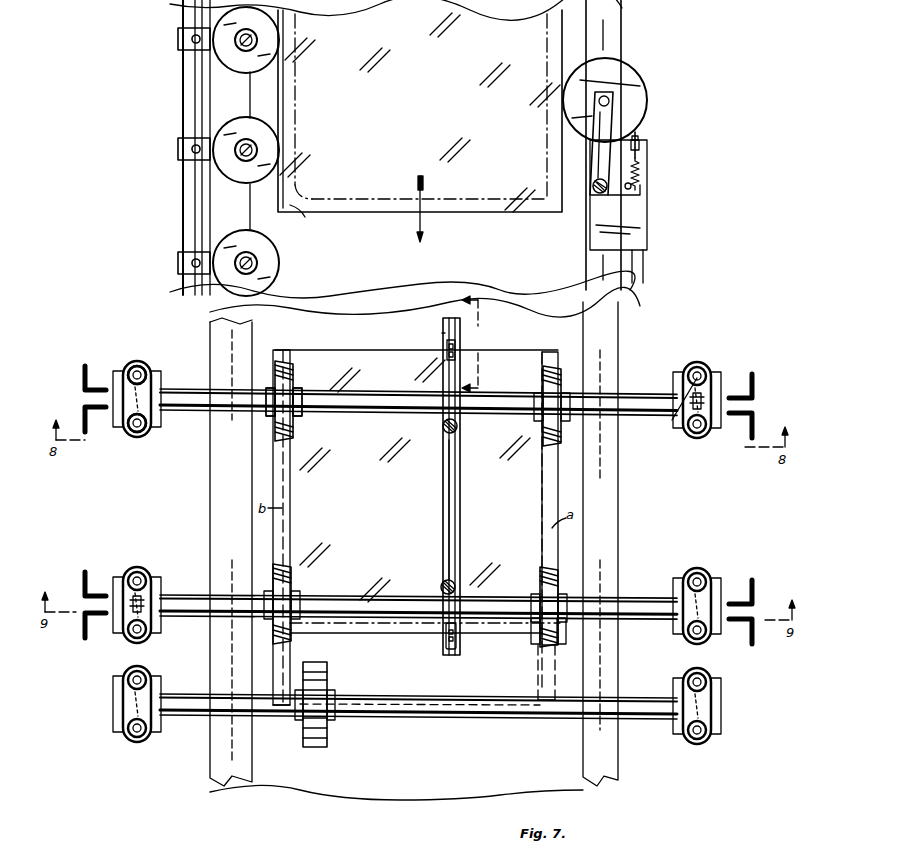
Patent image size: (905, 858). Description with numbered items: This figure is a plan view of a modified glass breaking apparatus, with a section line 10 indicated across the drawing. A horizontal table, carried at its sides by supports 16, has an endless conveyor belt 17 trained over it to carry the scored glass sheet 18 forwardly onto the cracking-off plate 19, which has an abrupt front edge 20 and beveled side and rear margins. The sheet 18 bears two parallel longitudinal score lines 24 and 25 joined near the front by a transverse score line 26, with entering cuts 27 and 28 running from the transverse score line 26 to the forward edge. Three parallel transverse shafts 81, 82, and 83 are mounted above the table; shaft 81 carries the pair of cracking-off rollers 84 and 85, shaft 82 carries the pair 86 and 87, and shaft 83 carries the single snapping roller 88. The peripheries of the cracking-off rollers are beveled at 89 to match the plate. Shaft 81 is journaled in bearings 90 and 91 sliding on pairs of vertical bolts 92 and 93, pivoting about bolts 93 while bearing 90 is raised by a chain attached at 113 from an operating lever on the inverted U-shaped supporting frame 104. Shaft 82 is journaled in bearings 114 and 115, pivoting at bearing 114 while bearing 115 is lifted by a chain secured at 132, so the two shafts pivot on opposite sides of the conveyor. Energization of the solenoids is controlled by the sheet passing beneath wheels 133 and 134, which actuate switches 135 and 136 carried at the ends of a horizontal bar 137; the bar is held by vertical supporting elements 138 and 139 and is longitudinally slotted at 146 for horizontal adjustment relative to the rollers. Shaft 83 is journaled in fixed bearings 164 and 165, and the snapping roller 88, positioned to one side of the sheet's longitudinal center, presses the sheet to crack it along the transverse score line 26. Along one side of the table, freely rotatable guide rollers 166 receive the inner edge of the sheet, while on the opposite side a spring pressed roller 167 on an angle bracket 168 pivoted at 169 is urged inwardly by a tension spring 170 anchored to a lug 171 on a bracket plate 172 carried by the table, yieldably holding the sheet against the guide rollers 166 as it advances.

The section line 10 is at (482, 344).
The support 16 is at (610, 674).
The endless conveyor belt 17 is at (570, 762).
The glass sheet 18 is at (470, 196).
The cracking-off plate 19 is at (560, 672).
The front edge 20 is at (448, 710).
The score line 24 is at (546, 128).
The score line 25 is at (297, 97).
The transverse score line 26 is at (382, 198).
The entering cut 27 is at (528, 206).
The entering cut 28 is at (306, 217).
The shaft 81 is at (362, 405).
The shaft 82 is at (350, 603).
The shaft 83 is at (386, 696).
The cracking-off roller 84 is at (572, 370).
The cracking-off roller 85 is at (298, 370).
The cracking-off roller 86 is at (532, 582).
The cracking-off roller 87 is at (296, 566).
The snapping roller 88 is at (303, 737).
The beveled periphery 89 is at (280, 416).
The bearing 90 is at (710, 392).
The bearing 91 is at (155, 388).
The vertical bolts 92 is at (683, 433).
The vertical bolts 93 is at (144, 368).
The supporting frame 104 is at (756, 390).
The chain attachment 113 is at (702, 420).
The bearing 114 is at (708, 596).
The bearing 115 is at (150, 590).
The chain attachment 132 is at (130, 614).
The wheel 133 is at (458, 350).
The wheel 134 is at (442, 652).
The switch 135 is at (440, 340).
The switch 136 is at (450, 650).
The horizontal bar 137 is at (443, 498).
The vertical supporting element 138 is at (456, 428).
The vertical supporting element 139 is at (440, 587).
The slot 146 is at (452, 476).
The fixed bearing 164 is at (708, 716).
The fixed bearing 165 is at (106, 700).
The guide rollers 166 is at (262, 56).
The spring pressed roller 167 is at (585, 80).
The angle bracket 168 is at (612, 112).
The pivot 169 is at (597, 192).
The tension spring 170 is at (640, 178).
The lug 171 is at (642, 147).
The bracket plate 172 is at (634, 226).